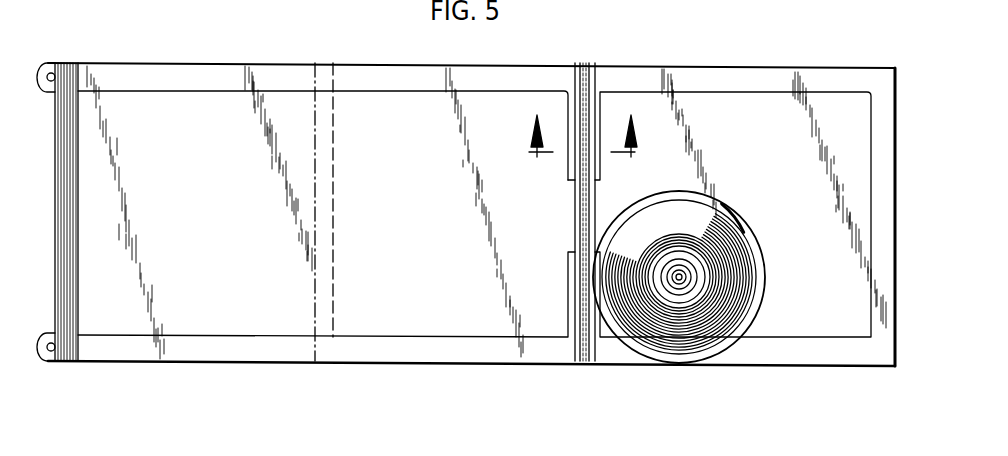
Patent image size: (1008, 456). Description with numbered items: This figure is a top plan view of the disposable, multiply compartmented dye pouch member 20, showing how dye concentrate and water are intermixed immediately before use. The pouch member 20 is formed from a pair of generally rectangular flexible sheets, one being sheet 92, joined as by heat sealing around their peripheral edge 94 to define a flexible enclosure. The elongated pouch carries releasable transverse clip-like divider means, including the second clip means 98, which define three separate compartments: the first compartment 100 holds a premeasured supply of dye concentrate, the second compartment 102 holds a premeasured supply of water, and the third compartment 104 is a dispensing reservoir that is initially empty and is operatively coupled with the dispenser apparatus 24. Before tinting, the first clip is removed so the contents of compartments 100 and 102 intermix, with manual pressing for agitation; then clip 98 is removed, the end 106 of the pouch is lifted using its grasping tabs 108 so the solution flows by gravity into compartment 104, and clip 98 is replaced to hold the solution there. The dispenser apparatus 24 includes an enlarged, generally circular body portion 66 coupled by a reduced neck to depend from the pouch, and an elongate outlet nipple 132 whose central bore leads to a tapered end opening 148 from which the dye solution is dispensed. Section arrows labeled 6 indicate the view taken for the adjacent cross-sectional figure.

The pouch member 20 is at (438, 368).
The dispenser apparatus 24 is at (754, 223).
The body portion 66 is at (736, 262).
The flexible sheet 92 is at (168, 103).
The peripheral edge 94 is at (361, 73).
The second clip means 98 is at (575, 208).
The first compartment 100 is at (184, 207).
The second compartment 102 is at (436, 207).
The third compartment 104 is at (761, 135).
The end of the pouch 106 is at (67, 291).
The grasping tabs 108 is at (42, 62).
The outlet nipple 132 is at (681, 262).
The end opening 148 is at (683, 282).
The section line 6 is at (583, 132).